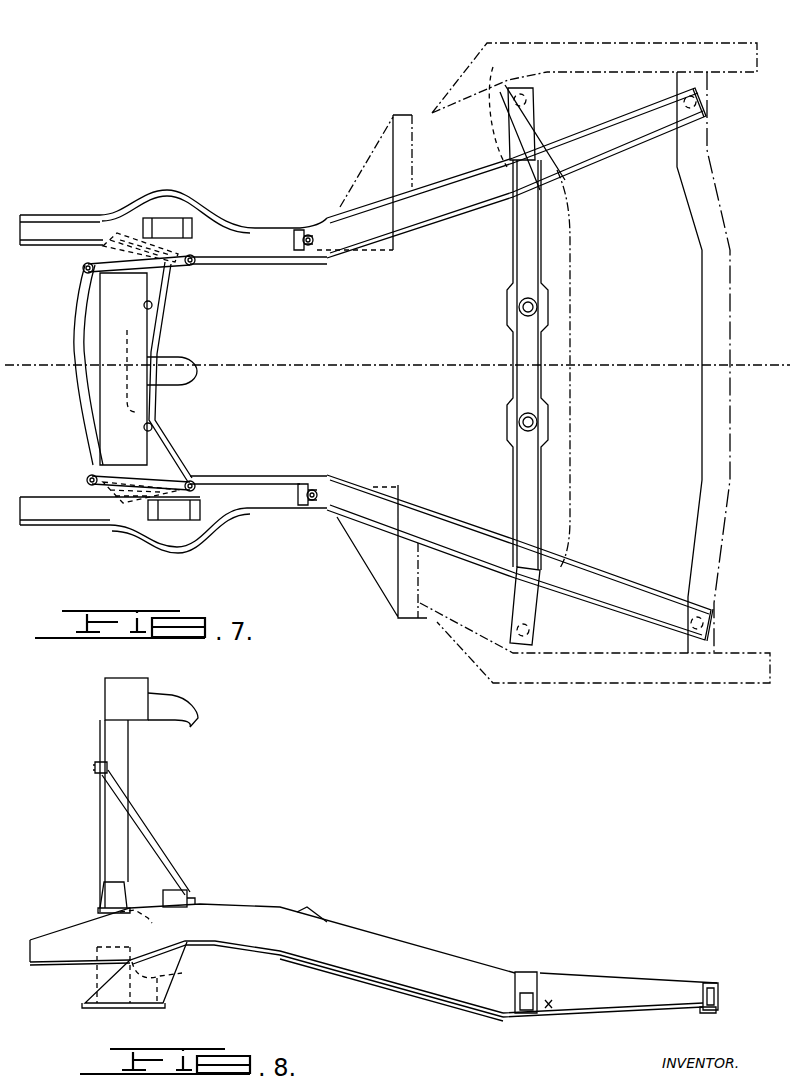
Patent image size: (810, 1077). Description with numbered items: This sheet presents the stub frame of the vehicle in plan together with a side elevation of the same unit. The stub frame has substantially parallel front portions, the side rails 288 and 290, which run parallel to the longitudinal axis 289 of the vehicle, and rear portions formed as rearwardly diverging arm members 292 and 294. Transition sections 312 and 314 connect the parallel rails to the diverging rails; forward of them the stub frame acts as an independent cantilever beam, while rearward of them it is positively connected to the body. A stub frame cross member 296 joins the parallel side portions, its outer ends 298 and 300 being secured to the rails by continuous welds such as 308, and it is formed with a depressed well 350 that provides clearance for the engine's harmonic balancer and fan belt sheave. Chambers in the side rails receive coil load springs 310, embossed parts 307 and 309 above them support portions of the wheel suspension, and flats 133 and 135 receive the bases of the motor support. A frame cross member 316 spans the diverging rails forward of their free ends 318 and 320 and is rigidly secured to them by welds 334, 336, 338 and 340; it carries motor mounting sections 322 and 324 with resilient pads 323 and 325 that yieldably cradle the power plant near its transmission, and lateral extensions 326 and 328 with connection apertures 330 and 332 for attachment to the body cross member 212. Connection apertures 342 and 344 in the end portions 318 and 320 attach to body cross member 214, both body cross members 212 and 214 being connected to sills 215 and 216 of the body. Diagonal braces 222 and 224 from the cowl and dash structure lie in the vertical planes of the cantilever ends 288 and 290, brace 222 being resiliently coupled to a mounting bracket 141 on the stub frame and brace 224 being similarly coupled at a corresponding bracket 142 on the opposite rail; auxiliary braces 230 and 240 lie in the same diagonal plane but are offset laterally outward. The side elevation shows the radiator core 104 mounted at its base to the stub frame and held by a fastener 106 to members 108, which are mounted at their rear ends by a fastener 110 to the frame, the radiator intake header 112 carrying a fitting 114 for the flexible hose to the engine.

In FIG. 8, the radiator core 104 is at (107, 814).
In FIG. 8, the fastener 106 is at (93, 767).
In FIG. 8, the members 108 is at (148, 835).
In FIG. 8, the fastener 110 is at (194, 908).
In FIG. 8, the intake header 112 is at (118, 688).
In FIG. 7, the fitting 114 is at (182, 358).
In FIG. 8, the fitting 114 is at (170, 703).
In FIG. 7, the flat 133 is at (158, 312).
In FIG. 7, the opposed flat 135 is at (155, 430).
In FIG. 7, the mounting bracket 141 is at (304, 483).
In FIG. 8, the mounting bracket 141 is at (318, 910).
In FIG. 7, the bracket 142 is at (293, 238).
In FIG. 7, the body cross member 212 is at (562, 224).
In FIG. 7, the body cross member 214 is at (702, 170).
In FIG. 7, the sill 215 is at (640, 682).
In FIG. 7, the sill 216 is at (596, 38).
In FIG. 7, the brace 222 is at (383, 488).
In FIG. 7, the brace 224 is at (372, 258).
In FIG. 7, the auxiliary brace 230 is at (372, 156).
In FIG. 7, the auxiliary brace 240 is at (370, 567).
In FIG. 7, the front portion 288 is at (262, 199).
In FIG. 7, the longitudinal axis 289 is at (15, 380).
In FIG. 7, the side rail 290 is at (240, 506).
In FIG. 8, the side rail 290 is at (300, 952).
In FIG. 7, the rearwardly diverging arm member 292 is at (460, 186).
In FIG. 7, the rearwardly diverging arm member 294 is at (482, 495).
In FIG. 7, the stub frame cross member 296 is at (78, 340).
In FIG. 7, the outer end 298 is at (180, 275).
In FIG. 7, the outer end 300 is at (190, 482).
In FIG. 7, the embossed part 307 is at (165, 220).
In FIG. 7, the continuous weld 308 is at (180, 472).
In FIG. 7, the embossed part 309 is at (180, 522).
In FIG. 8, the embossed part 309 is at (183, 893).
In FIG. 7, the coil load spring 310 is at (138, 203).
In FIG. 7, the transition section 312 is at (318, 205).
In FIG. 7, the transition section 314 is at (323, 474).
In FIG. 7, the frame cross member 316 is at (513, 354).
In FIG. 7, the end portion 318 is at (691, 88).
In FIG. 7, the end portion 320 is at (710, 630).
In FIG. 7, the motor mounting section 322 is at (540, 309).
In FIG. 7, the resilient cushion 323 is at (538, 300).
In FIG. 7, the motor mounting section 324 is at (540, 421).
In FIG. 7, the resilient cushion 325 is at (536, 430).
In FIG. 7, the lateral extension 326 is at (532, 121).
In FIG. 7, the lateral extension 328 is at (540, 622).
In FIG. 7, the connection aperture 330 is at (512, 87).
In FIG. 7, the connection aperture 332 is at (513, 633).
In FIG. 7, the weld 334 is at (497, 192).
In FIG. 7, the weld 336 is at (505, 172).
In FIG. 8, the weld 338 is at (515, 1011).
In FIG. 8, the weld 340 is at (550, 1005).
In FIG. 7, the connection aperture 342 is at (708, 92).
In FIG. 7, the connection aperture 344 is at (701, 617).
In FIG. 8, the depressed well 350 is at (172, 972).